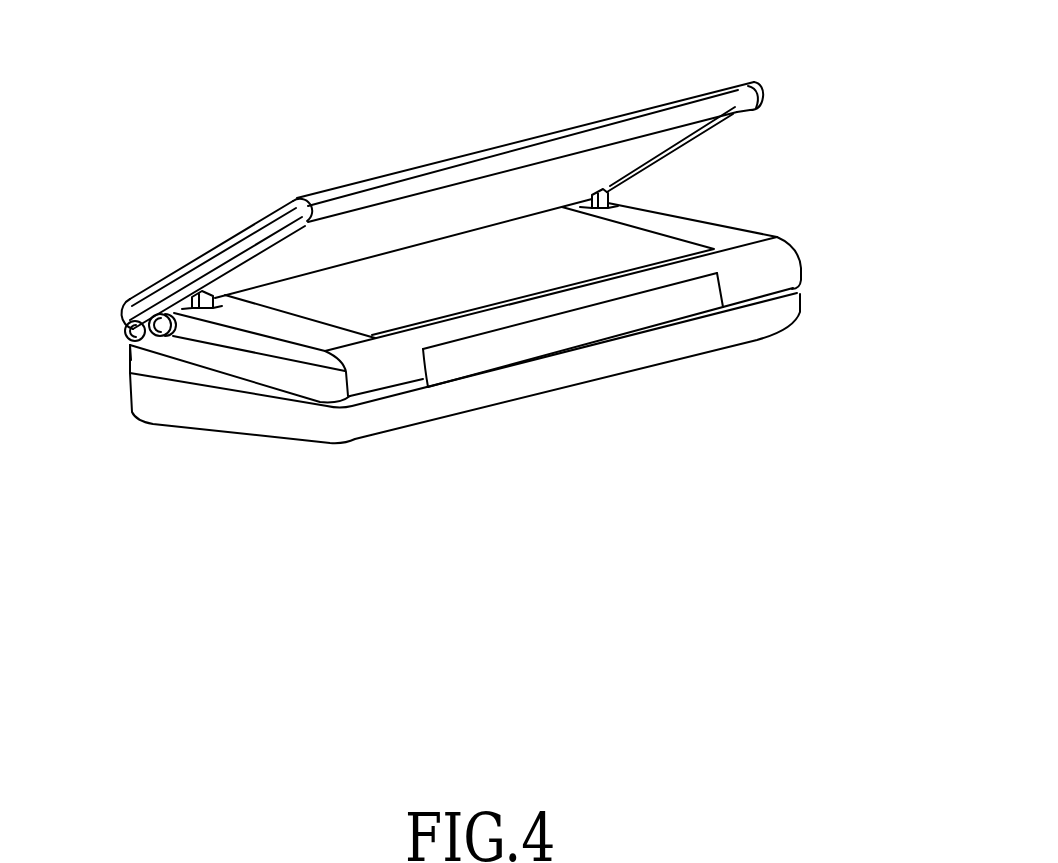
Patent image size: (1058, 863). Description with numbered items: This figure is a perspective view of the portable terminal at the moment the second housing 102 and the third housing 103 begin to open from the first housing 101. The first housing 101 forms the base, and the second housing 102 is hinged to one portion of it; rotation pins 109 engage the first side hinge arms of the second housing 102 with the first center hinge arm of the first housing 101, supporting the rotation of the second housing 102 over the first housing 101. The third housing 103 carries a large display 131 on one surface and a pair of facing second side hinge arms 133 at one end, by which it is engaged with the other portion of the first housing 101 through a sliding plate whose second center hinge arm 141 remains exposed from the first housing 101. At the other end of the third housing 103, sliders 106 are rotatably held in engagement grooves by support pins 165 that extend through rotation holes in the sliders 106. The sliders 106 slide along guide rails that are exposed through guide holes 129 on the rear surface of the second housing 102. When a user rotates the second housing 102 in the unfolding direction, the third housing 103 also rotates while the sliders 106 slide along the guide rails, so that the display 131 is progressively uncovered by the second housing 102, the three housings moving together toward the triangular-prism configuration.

The first housing 101 is at (260, 431).
The second housing 102 is at (527, 128).
The third housing 103 is at (250, 347).
The slider 106 is at (205, 297).
The rotation pin 109 is at (122, 331).
The guide hole 129 is at (278, 242).
The display 131 is at (545, 272).
The second side hinge arm 133 is at (780, 263).
The second center hinge arm 141 is at (515, 340).
The support pin 165 is at (131, 345).